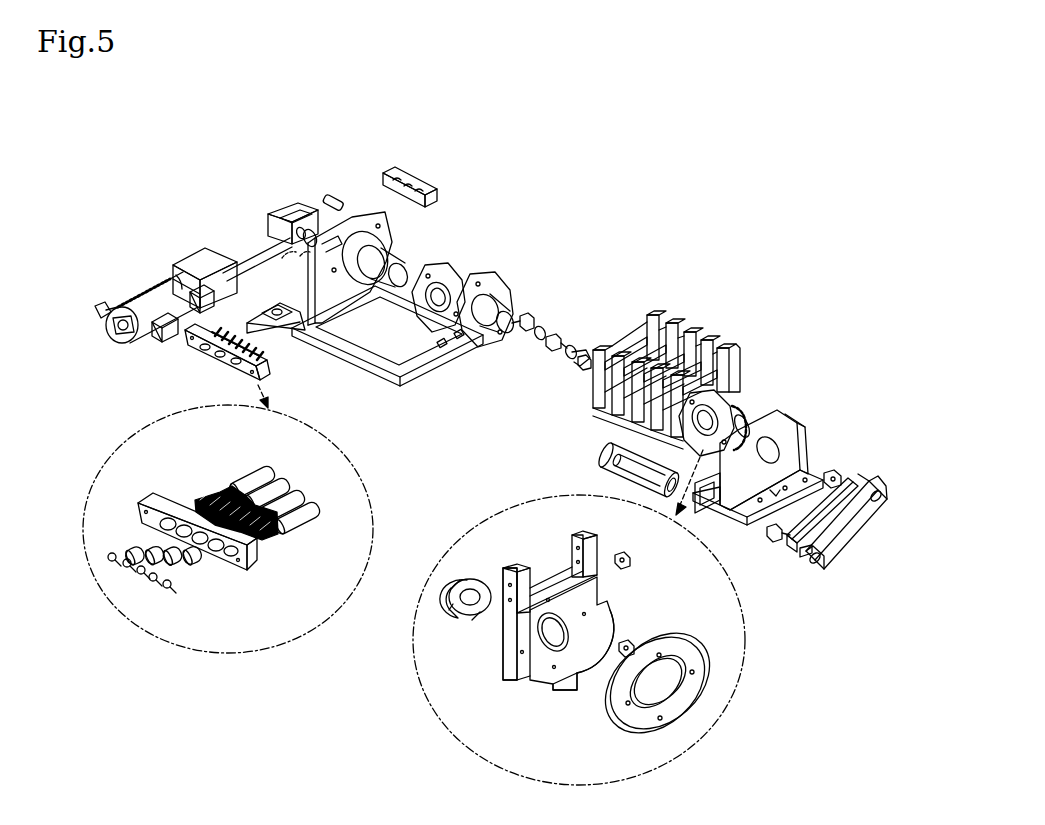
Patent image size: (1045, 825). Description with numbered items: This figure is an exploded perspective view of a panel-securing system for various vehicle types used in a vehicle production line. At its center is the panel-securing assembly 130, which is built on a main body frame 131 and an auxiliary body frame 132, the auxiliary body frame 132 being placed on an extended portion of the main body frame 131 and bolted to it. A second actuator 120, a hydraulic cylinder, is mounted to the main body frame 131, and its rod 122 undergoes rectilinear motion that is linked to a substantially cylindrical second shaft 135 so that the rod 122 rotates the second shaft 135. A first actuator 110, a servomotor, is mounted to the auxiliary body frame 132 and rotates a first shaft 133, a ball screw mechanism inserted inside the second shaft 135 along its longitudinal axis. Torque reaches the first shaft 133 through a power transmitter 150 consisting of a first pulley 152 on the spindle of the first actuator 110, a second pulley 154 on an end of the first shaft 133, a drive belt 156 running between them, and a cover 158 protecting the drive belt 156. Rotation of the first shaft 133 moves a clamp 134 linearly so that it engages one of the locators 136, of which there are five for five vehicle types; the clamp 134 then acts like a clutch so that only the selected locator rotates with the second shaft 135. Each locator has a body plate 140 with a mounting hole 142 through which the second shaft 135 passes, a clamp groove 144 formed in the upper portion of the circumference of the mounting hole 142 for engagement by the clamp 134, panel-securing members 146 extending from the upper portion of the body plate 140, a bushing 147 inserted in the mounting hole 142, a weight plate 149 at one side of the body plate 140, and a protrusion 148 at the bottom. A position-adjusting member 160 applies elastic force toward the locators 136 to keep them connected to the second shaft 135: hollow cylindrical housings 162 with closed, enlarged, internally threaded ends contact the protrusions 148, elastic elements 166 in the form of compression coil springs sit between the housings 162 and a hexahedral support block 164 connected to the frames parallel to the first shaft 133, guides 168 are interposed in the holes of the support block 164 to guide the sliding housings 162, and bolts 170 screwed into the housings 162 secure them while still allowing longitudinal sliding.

The first actuator 110 is at (600, 463).
The second actuator 120 is at (162, 277).
The rod 122 is at (255, 252).
The panel-securing assembly 130 is at (496, 258).
The main body frame 131 is at (357, 218).
The auxiliary body frame 132 is at (787, 417).
The first shaft 133 is at (550, 355).
The clamp 134 is at (523, 323).
The second shaft 135 is at (475, 352).
The locators 136 is at (733, 358).
The body plate 140 is at (507, 657).
The mounting hole 142 is at (548, 655).
The clamp groove 144 is at (557, 614).
The panel-securing members 146 is at (517, 565).
The bushing 147 is at (462, 614).
The protrusion 148 is at (560, 690).
The weight plate 149 is at (677, 643).
The power transmitter 150 is at (912, 460).
The first pulley 152 is at (772, 542).
The second pulley 154 is at (836, 470).
The drive belt 156 is at (797, 548).
The cover 158 is at (858, 547).
The position-adjusting member 160 is at (190, 362).
The housings 162 is at (303, 517).
The support block 164 is at (250, 570).
The elastic elements 166 is at (275, 538).
The guides 168 is at (196, 575).
The bolts 170 is at (166, 588).